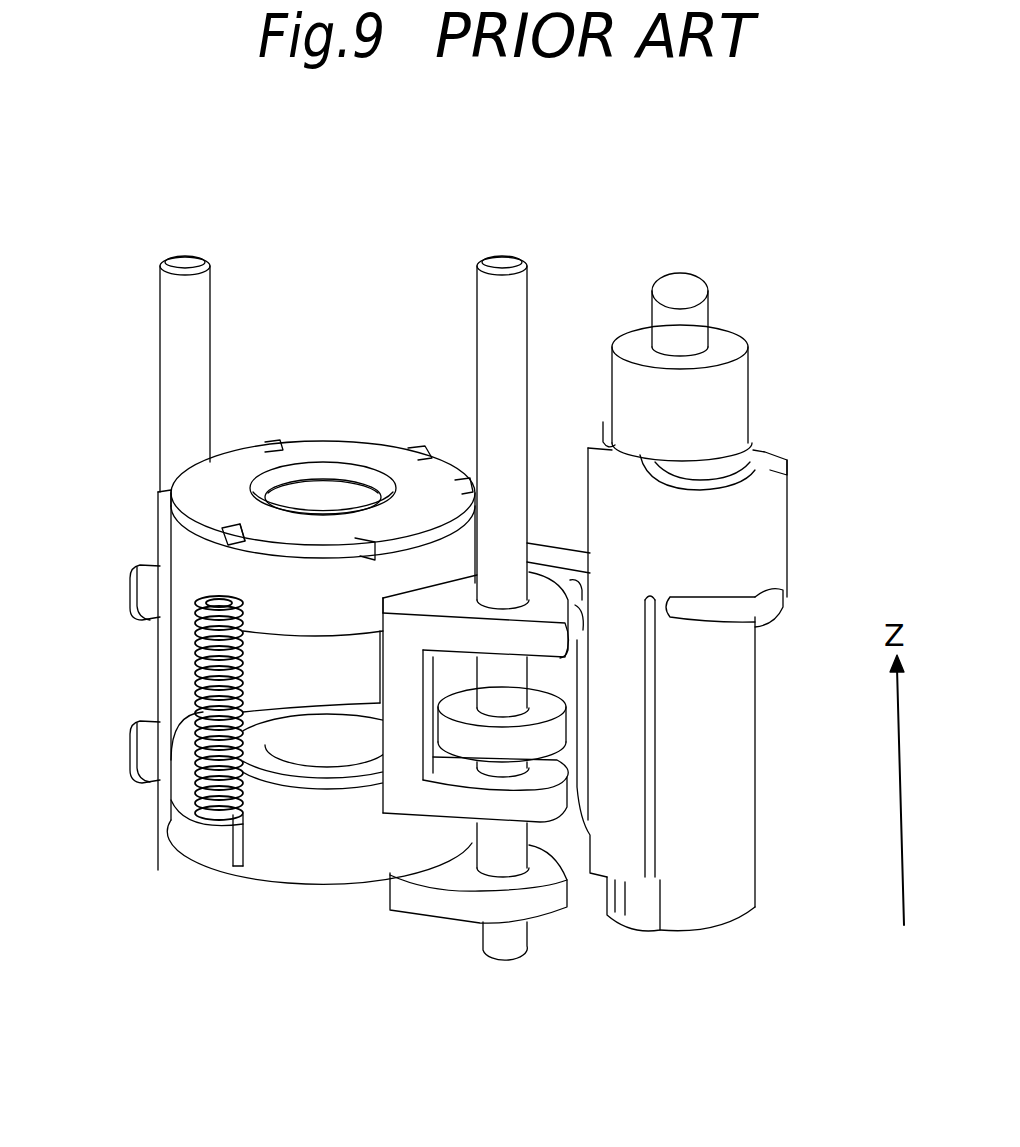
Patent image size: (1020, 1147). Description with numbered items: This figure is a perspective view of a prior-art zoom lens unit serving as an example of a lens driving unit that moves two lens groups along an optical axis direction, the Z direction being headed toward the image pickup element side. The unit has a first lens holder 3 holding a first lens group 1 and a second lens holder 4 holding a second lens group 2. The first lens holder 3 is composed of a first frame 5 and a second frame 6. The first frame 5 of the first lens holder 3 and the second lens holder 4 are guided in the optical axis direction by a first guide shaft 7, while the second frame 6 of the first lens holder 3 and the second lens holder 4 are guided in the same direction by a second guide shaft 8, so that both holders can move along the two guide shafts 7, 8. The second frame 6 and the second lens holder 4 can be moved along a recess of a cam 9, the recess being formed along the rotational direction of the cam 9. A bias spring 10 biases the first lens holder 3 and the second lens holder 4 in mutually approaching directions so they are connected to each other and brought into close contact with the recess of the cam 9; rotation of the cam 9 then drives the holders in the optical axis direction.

The first lens group 1 is at (318, 495).
The second lens group 2 is at (320, 756).
The first lens holder 3 is at (75, 535).
The second lens holder 4 is at (280, 878).
The first frame 5 is at (183, 558).
The second frame 6 is at (265, 667).
The first guide shaft 7 is at (504, 254).
The second guide shaft 8 is at (191, 256).
The cam 9 is at (765, 368).
The bias spring 10 is at (180, 815).